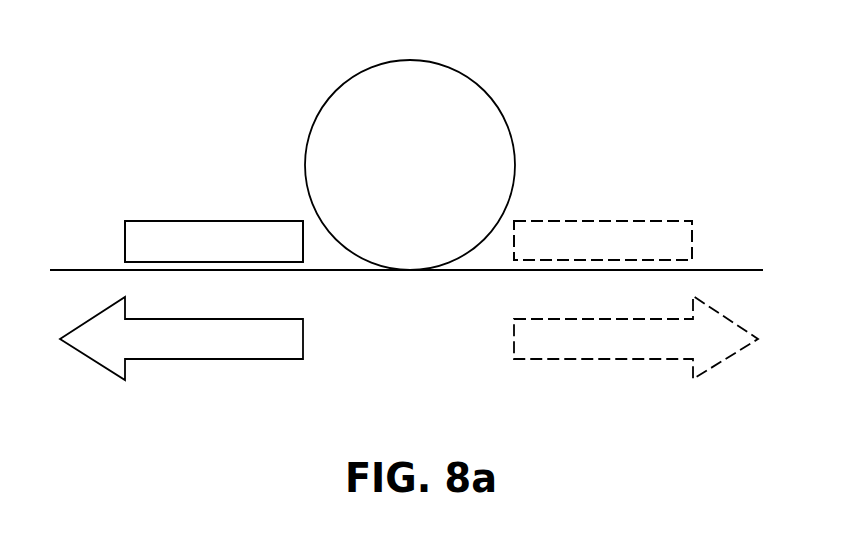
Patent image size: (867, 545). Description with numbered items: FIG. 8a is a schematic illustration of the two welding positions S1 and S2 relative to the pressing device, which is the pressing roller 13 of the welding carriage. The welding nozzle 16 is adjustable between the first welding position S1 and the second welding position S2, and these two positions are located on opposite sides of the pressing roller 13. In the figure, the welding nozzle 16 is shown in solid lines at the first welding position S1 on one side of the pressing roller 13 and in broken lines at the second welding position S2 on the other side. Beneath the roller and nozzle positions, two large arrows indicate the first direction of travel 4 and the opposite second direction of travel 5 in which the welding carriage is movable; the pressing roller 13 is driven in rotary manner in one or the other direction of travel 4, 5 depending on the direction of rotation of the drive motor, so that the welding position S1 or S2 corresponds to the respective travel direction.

The pressing roller 13 is at (407, 75).
The welding nozzle 16 is at (140, 242).
The first welding position S1 is at (188, 230).
The second welding position S2 is at (612, 230).
The first direction of travel 4 is at (187, 340).
The second direction of travel 5 is at (607, 341).